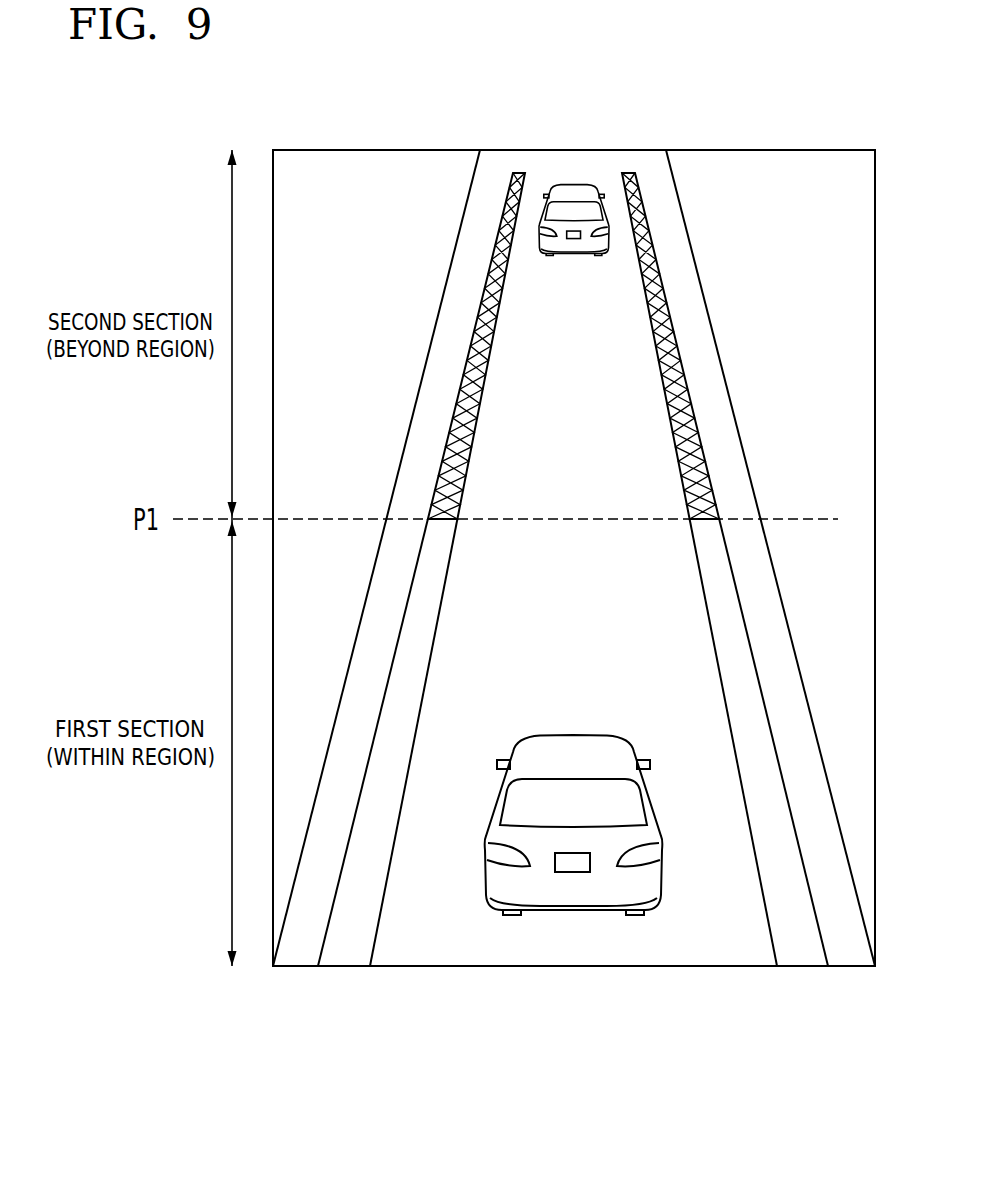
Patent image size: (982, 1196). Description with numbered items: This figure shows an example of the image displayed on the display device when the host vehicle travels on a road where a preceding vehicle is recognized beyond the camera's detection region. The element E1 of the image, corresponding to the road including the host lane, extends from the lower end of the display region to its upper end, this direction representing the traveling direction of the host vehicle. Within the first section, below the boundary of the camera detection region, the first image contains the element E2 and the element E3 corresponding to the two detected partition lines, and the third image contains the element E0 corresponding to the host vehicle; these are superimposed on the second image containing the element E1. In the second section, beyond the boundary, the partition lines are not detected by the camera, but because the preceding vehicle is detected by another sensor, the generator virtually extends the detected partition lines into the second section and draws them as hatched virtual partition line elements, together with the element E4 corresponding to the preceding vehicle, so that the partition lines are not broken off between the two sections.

The element of an image corresponding to the host vehicle E0 is at (573, 908).
The element of an image corresponding to the road E1 is at (658, 186).
The element of an image corresponding to the partition line LM1 E2 is at (346, 958).
The element of an image corresponding to the partition line LM2 E3 is at (800, 957).
The element of an image corresponding to the preceding vehicle E4 is at (571, 185).